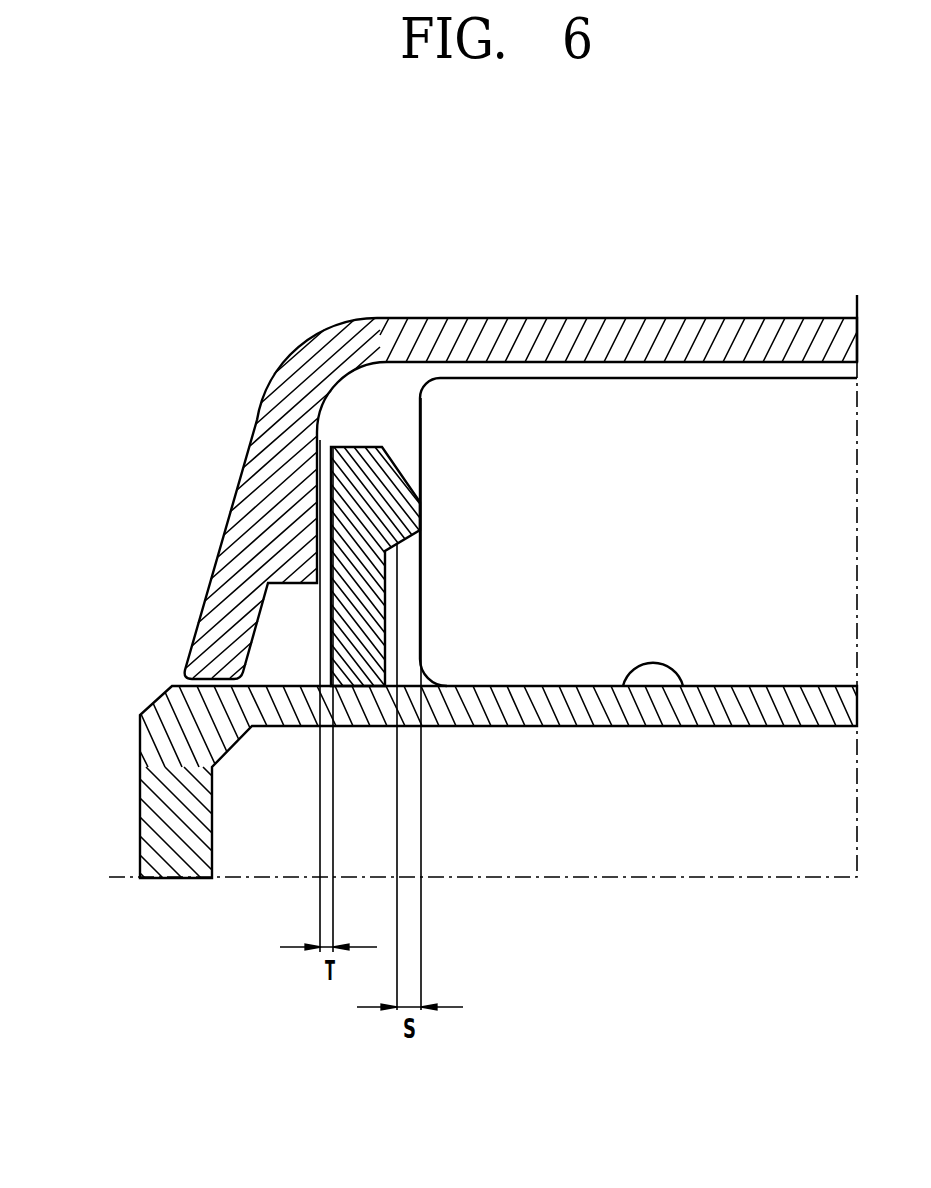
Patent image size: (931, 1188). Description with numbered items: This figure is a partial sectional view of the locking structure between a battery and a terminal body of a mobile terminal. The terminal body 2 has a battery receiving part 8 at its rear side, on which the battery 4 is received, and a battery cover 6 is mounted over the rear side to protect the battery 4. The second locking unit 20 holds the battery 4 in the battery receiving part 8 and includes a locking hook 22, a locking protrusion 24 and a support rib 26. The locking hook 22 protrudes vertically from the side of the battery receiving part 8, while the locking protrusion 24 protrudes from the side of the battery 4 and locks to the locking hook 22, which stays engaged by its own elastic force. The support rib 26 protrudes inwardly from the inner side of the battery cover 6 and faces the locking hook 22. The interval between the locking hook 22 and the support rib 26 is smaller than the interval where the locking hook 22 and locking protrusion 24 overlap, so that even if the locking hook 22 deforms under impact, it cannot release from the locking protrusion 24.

The terminal body 2 is at (158, 791).
The battery 4 is at (722, 420).
The battery cover 6 is at (513, 326).
The battery receiving part 8 is at (686, 690).
The second locking unit 20 is at (307, 618).
The locking hook 22 is at (383, 500).
The locking protrusion 24 is at (407, 573).
The support rib 26 is at (300, 545).